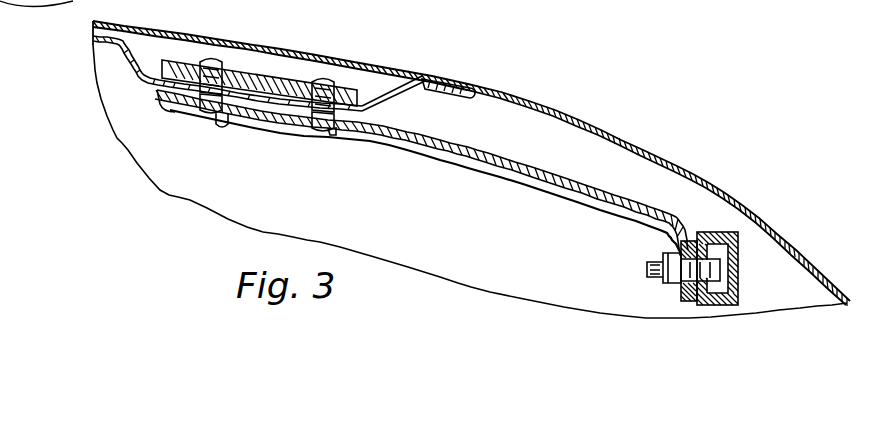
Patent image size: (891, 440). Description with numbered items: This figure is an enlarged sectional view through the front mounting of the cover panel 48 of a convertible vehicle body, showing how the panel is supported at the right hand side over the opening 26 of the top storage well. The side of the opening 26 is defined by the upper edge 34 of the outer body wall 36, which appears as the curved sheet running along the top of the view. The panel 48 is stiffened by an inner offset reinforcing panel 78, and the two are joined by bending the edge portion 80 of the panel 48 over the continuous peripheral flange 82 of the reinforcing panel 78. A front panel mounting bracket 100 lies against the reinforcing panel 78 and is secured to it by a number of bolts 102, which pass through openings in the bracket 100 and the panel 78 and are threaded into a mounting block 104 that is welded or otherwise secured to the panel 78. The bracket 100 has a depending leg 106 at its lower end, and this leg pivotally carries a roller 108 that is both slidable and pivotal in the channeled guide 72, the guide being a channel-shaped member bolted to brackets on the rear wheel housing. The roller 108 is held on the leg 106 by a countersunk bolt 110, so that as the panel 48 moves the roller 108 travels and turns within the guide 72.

The opening 26 is at (493, 95).
The upper edges 34 is at (490, 100).
The outer body walls 36 is at (640, 150).
The panel 48 is at (297, 50).
The channeled guide 72 is at (738, 258).
The inner offset reinforcing panel 78 is at (134, 62).
The edge portion 80 is at (447, 97).
The continuous peripheral flange 82 is at (422, 76).
The front panel mounting bracket 100 is at (550, 180).
The bolts 102 is at (312, 130).
The mounting block 104 is at (260, 76).
The depending leg 106 is at (676, 250).
The roller 108 is at (707, 232).
The countersunk bolt 110 is at (647, 264).